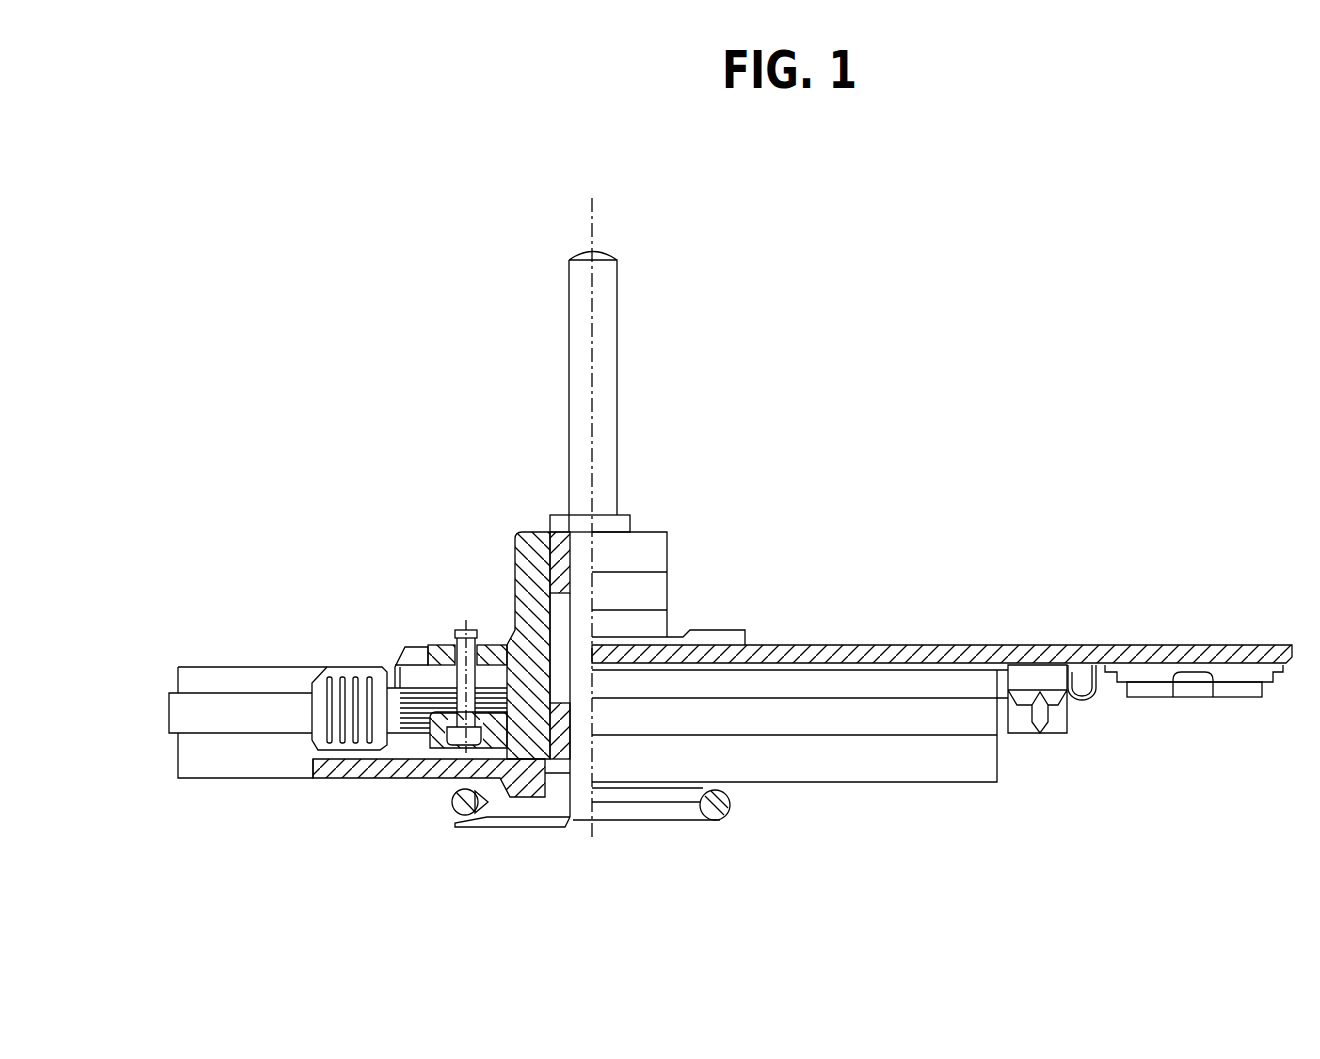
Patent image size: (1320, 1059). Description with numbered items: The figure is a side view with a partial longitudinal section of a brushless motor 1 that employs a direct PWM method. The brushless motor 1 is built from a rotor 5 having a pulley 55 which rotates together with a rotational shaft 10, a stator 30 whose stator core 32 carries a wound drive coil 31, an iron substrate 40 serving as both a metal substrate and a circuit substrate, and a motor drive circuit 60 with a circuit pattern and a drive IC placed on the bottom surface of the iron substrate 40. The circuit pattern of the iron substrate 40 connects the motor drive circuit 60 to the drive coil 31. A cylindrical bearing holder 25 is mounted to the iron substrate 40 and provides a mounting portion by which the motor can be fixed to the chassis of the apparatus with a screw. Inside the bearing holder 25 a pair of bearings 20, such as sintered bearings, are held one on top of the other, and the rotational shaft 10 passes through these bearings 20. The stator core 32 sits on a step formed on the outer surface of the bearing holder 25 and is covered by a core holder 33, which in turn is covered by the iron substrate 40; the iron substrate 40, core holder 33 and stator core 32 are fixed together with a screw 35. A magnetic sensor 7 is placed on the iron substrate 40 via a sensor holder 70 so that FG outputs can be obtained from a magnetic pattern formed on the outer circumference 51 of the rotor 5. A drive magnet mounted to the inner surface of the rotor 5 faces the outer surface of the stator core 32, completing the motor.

The brushless motor 1 is at (1122, 466).
The rotor 5 is at (905, 763).
The magnetic sensor 7 is at (1062, 735).
The rotational shaft 10 is at (580, 537).
The bearings 20 is at (517, 612).
The bearing holder 25 is at (655, 553).
The stator 30 is at (250, 573).
The drive coil 31 is at (365, 667).
The stator core 32 is at (400, 690).
The core holder 33 is at (405, 660).
The screw 35 is at (455, 630).
The iron substrate 40 is at (892, 645).
The outer circumference 51 is at (1007, 737).
The pulley 55 is at (467, 828).
The motor drive circuit 60 is at (1175, 697).
The sensor holder 70 is at (1047, 672).